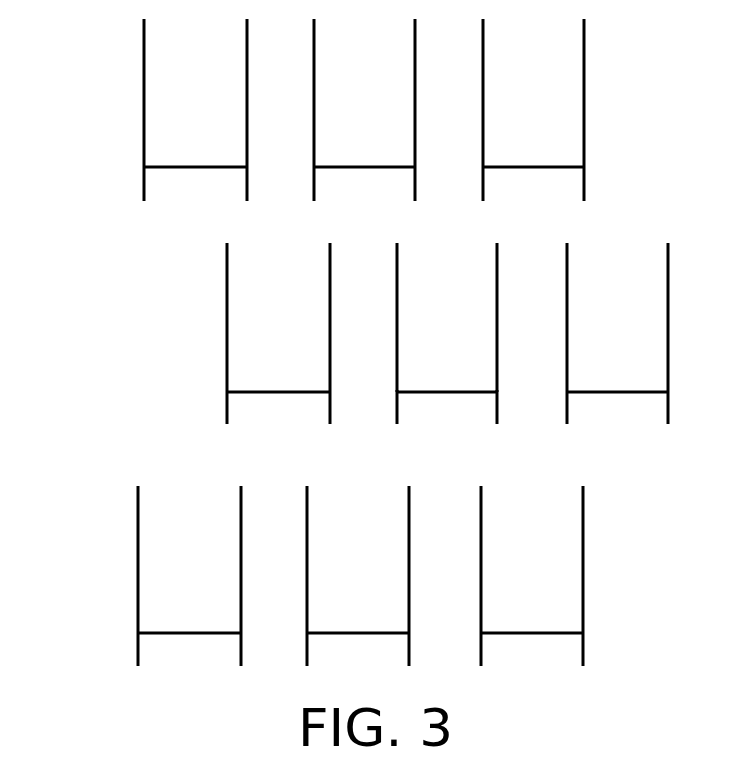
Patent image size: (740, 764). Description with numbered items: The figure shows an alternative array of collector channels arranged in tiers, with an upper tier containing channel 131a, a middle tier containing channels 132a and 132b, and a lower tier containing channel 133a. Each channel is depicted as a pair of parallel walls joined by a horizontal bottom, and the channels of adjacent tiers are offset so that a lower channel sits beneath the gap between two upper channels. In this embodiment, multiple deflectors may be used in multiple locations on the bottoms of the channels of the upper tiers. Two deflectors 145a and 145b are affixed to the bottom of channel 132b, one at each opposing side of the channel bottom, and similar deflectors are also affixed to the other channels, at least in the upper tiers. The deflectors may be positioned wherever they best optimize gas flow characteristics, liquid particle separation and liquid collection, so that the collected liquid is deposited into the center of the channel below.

The collector channel 131a is at (143, 130).
The collector channel 132a is at (226, 320).
The collector channel 132b is at (397, 343).
The collector channel 133a is at (137, 586).
The deflector 145a is at (395, 400).
The deflector 145b is at (500, 403).